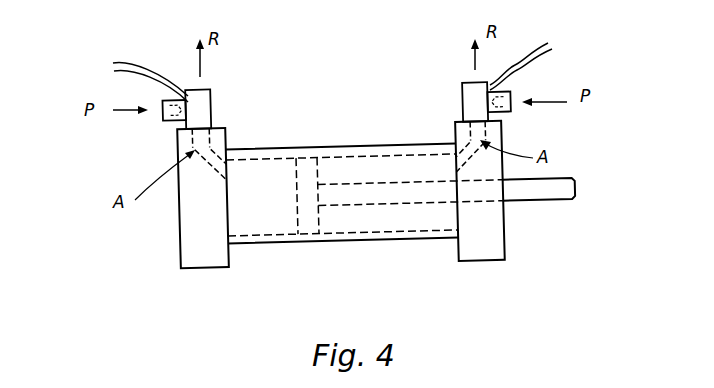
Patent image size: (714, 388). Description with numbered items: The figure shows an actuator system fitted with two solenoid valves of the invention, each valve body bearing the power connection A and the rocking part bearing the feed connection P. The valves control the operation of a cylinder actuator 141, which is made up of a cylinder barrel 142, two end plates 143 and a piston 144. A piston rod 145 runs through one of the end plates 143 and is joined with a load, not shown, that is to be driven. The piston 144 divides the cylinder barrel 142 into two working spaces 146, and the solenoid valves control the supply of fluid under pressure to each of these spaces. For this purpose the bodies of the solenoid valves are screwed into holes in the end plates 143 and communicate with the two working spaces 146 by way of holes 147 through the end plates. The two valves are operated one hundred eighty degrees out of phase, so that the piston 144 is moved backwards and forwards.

The cylinder actuator 141 is at (349, 140).
The cylinder barrel 142 is at (308, 147).
The end plates 143 is at (195, 223).
The piston 144 is at (303, 217).
The piston rod 145 is at (558, 190).
The working spaces 146 is at (245, 217).
The holes 147 is at (226, 147).